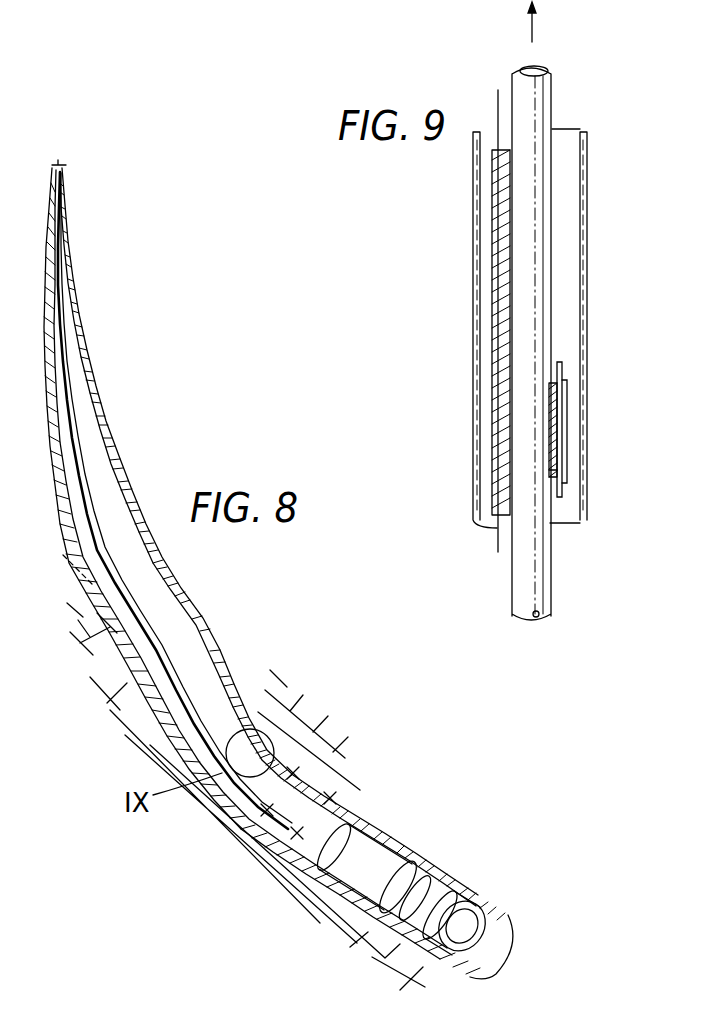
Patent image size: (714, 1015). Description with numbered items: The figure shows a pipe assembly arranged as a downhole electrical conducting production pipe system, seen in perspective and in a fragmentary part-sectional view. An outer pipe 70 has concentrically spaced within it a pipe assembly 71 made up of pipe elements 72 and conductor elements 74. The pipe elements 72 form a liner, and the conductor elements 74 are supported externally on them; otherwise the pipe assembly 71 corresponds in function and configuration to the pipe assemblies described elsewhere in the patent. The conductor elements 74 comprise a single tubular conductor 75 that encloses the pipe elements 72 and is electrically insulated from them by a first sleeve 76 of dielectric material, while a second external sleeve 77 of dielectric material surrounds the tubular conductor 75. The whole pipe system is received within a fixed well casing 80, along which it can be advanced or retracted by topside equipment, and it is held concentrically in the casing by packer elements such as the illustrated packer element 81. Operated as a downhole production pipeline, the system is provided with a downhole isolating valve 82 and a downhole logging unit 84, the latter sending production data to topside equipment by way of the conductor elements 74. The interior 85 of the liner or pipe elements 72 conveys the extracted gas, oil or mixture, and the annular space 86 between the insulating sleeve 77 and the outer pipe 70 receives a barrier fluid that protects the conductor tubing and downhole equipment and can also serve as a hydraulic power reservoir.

In FIG. 8, the outer pipe 70 is at (192, 657).
In FIG. 9, the outer pipe 70 is at (472, 251).
In FIG. 9, the pipe assembly 71 is at (490, 318).
In FIG. 9, the pipe elements 72 is at (522, 598).
In FIG. 9, the conductor elements 74 is at (555, 475).
In FIG. 9, the tubular conductor 75 is at (565, 362).
In FIG. 9, the first sleeve 76 is at (550, 405).
In FIG. 9, the second external sleeve 77 is at (565, 446).
In FIG. 8, the well casing 80 is at (232, 676).
In FIG. 8, the packer element 81 is at (337, 773).
In FIG. 8, the downhole isolating valve 82 is at (430, 870).
In FIG. 8, the downhole logging unit 84 is at (363, 843).
In FIG. 9, the interior 85 is at (552, 72).
In FIG. 9, the annular space 86 is at (587, 131).